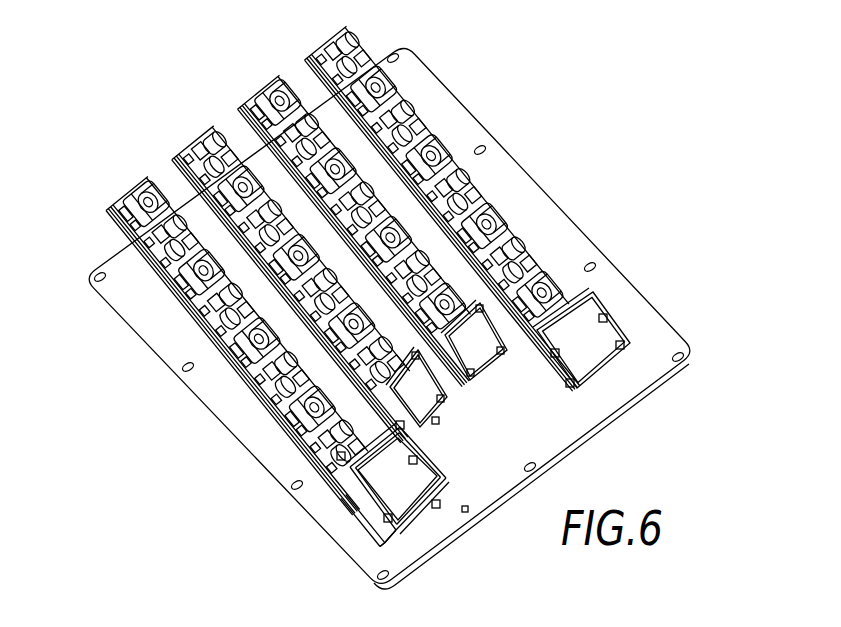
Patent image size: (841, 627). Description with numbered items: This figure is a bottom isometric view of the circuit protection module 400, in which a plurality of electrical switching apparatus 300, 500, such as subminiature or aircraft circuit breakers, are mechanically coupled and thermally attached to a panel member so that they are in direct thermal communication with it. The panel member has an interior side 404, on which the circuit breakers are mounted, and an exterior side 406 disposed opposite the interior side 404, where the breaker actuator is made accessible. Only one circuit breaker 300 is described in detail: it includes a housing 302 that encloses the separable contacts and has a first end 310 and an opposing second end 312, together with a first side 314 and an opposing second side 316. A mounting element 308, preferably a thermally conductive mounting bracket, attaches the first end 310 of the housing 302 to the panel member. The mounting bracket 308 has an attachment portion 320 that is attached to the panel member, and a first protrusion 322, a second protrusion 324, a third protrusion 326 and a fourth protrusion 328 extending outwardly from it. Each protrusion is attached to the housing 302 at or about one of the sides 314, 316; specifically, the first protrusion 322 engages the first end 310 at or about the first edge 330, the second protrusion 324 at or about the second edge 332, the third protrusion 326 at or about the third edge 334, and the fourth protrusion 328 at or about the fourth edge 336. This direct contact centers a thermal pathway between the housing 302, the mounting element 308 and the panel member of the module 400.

The circuit breaker 300 is at (582, 226).
The housing 302 is at (434, 480).
The mounting element 308 is at (373, 552).
The first end 310 is at (462, 493).
The second end 312 is at (430, 425).
The first side 314 is at (412, 483).
The second side 316 is at (342, 468).
The attachment portion 320 is at (442, 516).
The first protrusion 322 is at (383, 497).
The second protrusion 324 is at (468, 512).
The third protrusion 326 is at (437, 458).
The fourth protrusion 328 is at (350, 518).
The first edge 330 is at (416, 530).
The second edge 332 is at (418, 442).
The third edge 334 is at (399, 431).
The fourth edge 336 is at (330, 463).
The circuit protection module 400 is at (666, 457).
The interior side 404 is at (591, 425).
The exterior side 406 is at (648, 409).
The electrical switching apparatus 500 is at (450, 129).